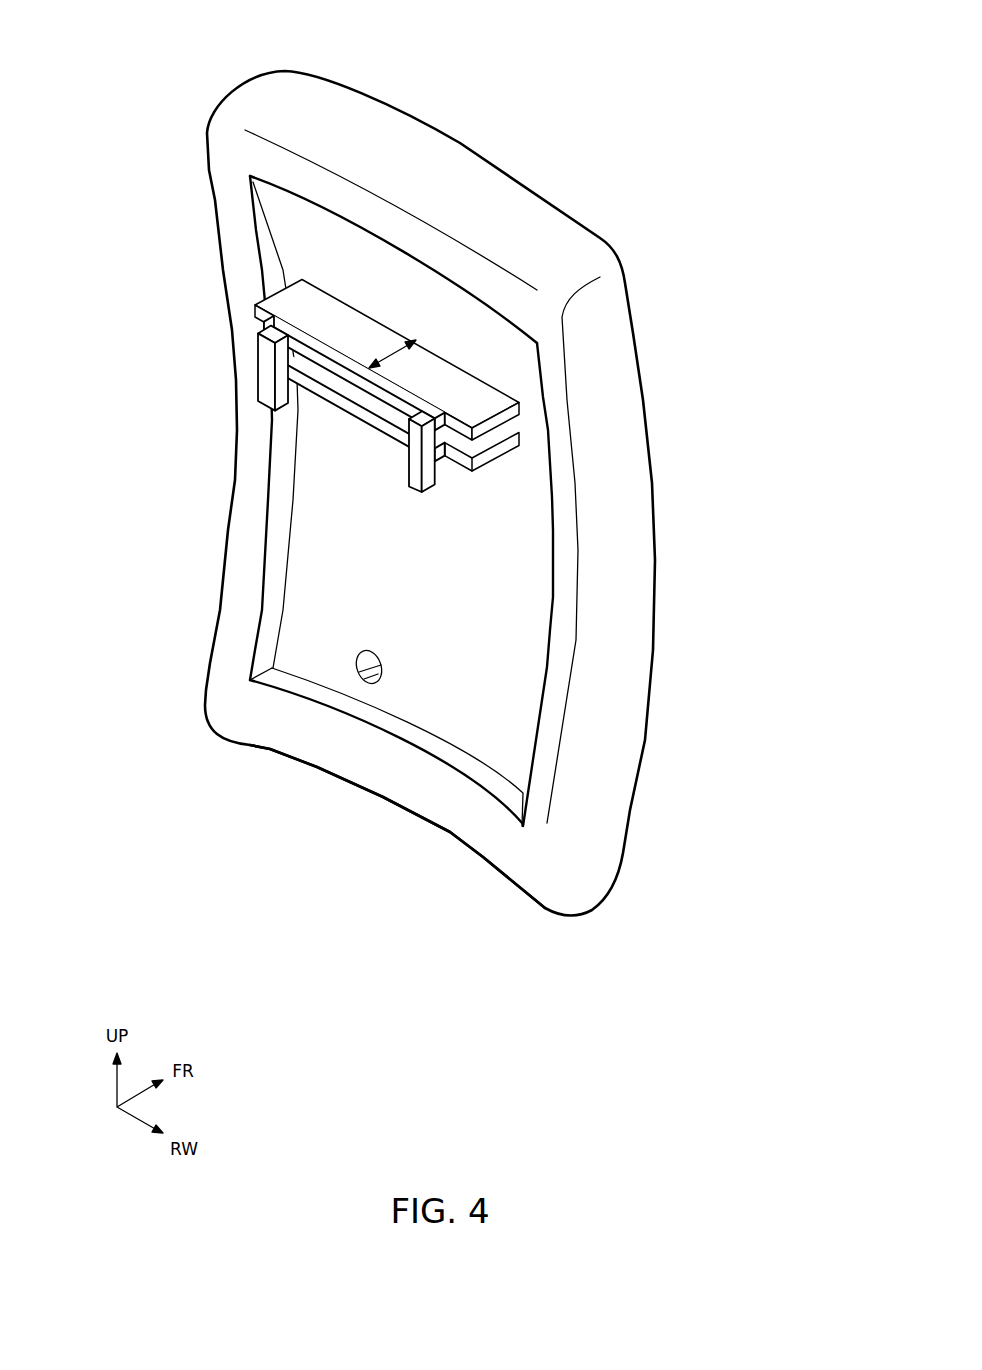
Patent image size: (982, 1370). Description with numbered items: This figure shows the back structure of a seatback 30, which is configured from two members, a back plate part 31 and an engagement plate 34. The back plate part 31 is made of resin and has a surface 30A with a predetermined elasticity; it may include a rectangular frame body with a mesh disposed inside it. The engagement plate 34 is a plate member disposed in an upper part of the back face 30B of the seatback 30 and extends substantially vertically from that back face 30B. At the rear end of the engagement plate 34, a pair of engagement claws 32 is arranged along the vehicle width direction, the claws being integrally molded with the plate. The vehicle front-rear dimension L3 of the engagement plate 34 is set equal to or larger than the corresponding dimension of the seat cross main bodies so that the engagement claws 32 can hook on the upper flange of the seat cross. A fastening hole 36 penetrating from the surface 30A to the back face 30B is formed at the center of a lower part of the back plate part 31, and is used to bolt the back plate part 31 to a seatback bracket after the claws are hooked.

The seatback 30 is at (425, 108).
The surface 30A is at (643, 401).
The back face 30B is at (317, 562).
The back plate part 31 is at (460, 823).
The engagement claws 32 is at (257, 380).
The engagement plate 34 is at (335, 310).
The fastening hole 36 is at (367, 647).
The vehicle front-rear dimension L3 is at (391, 347).